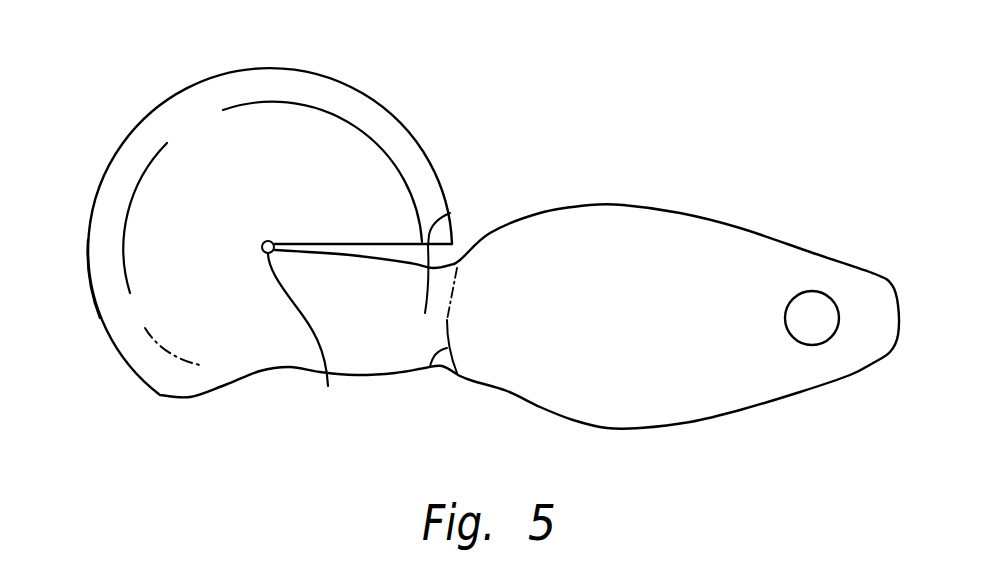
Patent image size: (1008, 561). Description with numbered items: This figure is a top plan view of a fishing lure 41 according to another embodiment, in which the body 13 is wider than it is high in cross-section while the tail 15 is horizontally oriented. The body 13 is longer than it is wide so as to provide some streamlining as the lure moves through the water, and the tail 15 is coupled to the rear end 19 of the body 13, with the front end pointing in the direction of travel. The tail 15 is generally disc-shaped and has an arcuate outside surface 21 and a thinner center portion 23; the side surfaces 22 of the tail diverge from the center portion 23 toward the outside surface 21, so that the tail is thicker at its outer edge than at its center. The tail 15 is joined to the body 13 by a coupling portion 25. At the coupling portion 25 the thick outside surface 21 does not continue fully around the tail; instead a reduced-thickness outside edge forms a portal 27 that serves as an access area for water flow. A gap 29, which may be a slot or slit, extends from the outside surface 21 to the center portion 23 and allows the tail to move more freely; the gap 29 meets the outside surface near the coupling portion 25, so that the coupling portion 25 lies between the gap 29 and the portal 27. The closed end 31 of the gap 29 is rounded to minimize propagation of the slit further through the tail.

The fishing lure 41 is at (761, 193).
The body 13 is at (785, 277).
The tail 15 is at (273, 123).
The rear end 19 is at (431, 366).
The outside surface 21 is at (90, 225).
The side surfaces 22 is at (165, 285).
The center portion 23 is at (210, 187).
The coupling portion 25 is at (450, 213).
The portal 27 is at (275, 373).
The gap 29 is at (338, 243).
The closed end 31 is at (304, 329).